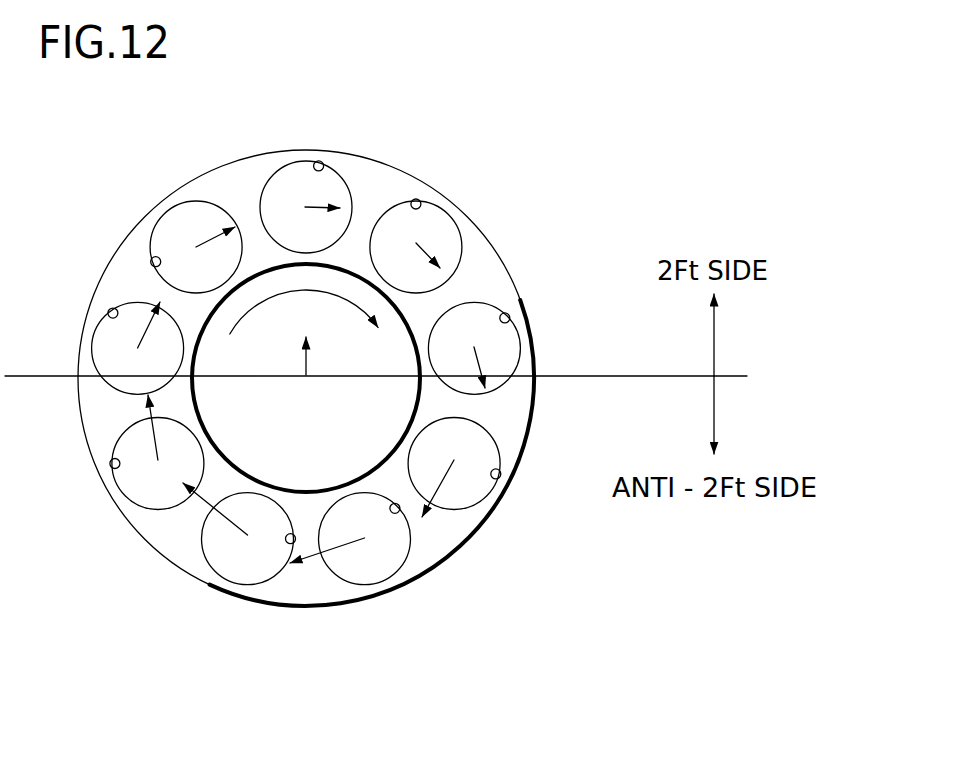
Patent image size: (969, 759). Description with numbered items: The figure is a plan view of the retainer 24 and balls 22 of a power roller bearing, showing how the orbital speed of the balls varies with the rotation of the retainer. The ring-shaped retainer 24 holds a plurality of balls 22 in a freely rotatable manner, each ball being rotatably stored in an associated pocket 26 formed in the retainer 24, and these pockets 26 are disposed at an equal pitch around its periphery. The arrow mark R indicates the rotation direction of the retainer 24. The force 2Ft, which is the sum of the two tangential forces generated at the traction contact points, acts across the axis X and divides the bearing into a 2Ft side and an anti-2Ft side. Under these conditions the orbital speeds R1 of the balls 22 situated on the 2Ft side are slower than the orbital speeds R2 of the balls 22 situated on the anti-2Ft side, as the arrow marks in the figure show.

The balls 22 is at (264, 191).
The retainer 24 is at (535, 338).
The pockets 26 is at (318, 161).
The orbital speeds of balls on the 2Ft side R1 is at (194, 245).
The orbital speeds of balls on the anti-2Ft side R2 is at (450, 478).
The rotation direction of the retainer R is at (304, 329).
The axis X is at (660, 375).
The force 2Ft is at (310, 377).